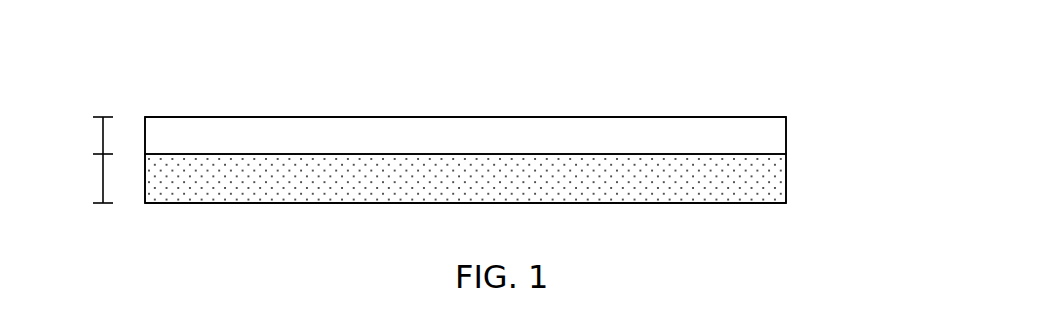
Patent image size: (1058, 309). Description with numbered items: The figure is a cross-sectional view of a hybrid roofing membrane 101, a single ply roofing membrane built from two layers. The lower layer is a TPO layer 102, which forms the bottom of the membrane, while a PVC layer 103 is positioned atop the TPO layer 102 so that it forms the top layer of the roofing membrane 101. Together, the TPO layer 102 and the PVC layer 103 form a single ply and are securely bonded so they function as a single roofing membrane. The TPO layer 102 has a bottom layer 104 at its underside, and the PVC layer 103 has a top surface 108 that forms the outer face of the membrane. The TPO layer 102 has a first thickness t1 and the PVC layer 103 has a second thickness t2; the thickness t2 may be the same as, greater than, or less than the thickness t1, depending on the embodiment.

The hybrid roofing membrane 101 is at (183, 66).
The TPO layer 102 is at (774, 182).
The PVC layer 103 is at (774, 148).
The bottom layer 104 is at (700, 203).
The top surface 108 is at (611, 117).
The first thickness t1 is at (101, 187).
The second thickness t2 is at (102, 137).